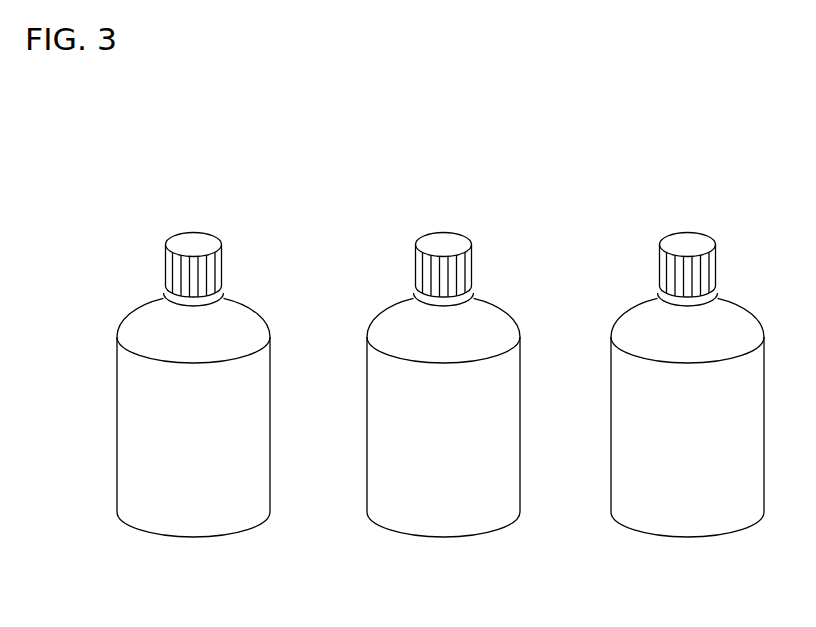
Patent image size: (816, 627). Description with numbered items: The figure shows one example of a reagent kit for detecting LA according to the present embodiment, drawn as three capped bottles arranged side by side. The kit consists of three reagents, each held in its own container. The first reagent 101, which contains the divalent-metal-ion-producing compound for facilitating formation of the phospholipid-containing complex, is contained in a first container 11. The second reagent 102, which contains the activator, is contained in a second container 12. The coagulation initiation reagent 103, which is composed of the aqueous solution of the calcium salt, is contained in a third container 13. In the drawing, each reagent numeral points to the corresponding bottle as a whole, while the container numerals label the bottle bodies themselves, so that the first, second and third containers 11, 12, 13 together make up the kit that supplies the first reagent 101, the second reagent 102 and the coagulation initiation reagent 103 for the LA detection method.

The first reagent 101 is at (118, 285).
The second reagent 102 is at (374, 290).
The coagulation initiation reagent 103 is at (618, 293).
The first container 11 is at (117, 417).
The second container 12 is at (368, 425).
The third container 13 is at (611, 432).